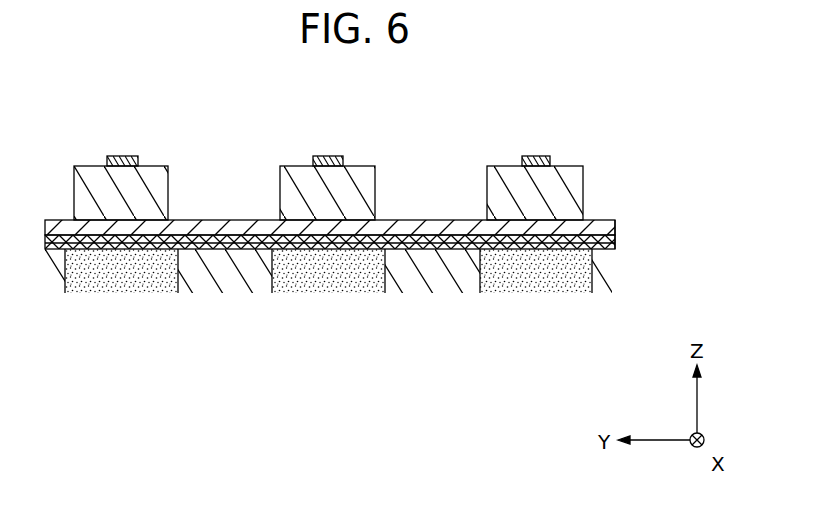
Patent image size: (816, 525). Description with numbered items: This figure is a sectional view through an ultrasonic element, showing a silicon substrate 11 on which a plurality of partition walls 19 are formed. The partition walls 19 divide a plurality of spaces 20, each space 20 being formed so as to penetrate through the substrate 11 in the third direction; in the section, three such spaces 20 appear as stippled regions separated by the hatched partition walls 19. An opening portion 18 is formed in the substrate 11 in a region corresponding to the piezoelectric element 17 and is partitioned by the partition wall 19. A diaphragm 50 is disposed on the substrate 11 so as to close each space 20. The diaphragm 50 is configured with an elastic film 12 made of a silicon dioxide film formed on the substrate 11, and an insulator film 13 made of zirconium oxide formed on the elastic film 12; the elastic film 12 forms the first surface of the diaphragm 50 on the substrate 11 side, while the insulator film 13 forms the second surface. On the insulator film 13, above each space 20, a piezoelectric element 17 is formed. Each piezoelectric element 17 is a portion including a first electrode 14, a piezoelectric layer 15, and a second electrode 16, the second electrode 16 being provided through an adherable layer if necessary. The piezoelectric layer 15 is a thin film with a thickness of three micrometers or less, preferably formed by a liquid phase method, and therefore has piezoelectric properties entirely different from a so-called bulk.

The substrate 11 is at (328, 318).
The elastic film 12 is at (617, 243).
The insulator film 13 is at (617, 232).
The first electrode 14 is at (89, 219).
The piezoelectric layer 15 is at (122, 160).
The second electrode 16 is at (136, 138).
The piezoelectric element 17 is at (118, 145).
The opening portion 18 is at (175, 252).
The partition wall 19 is at (437, 272).
The space 20 is at (117, 277).
The diaphragm 50 is at (388, 236).